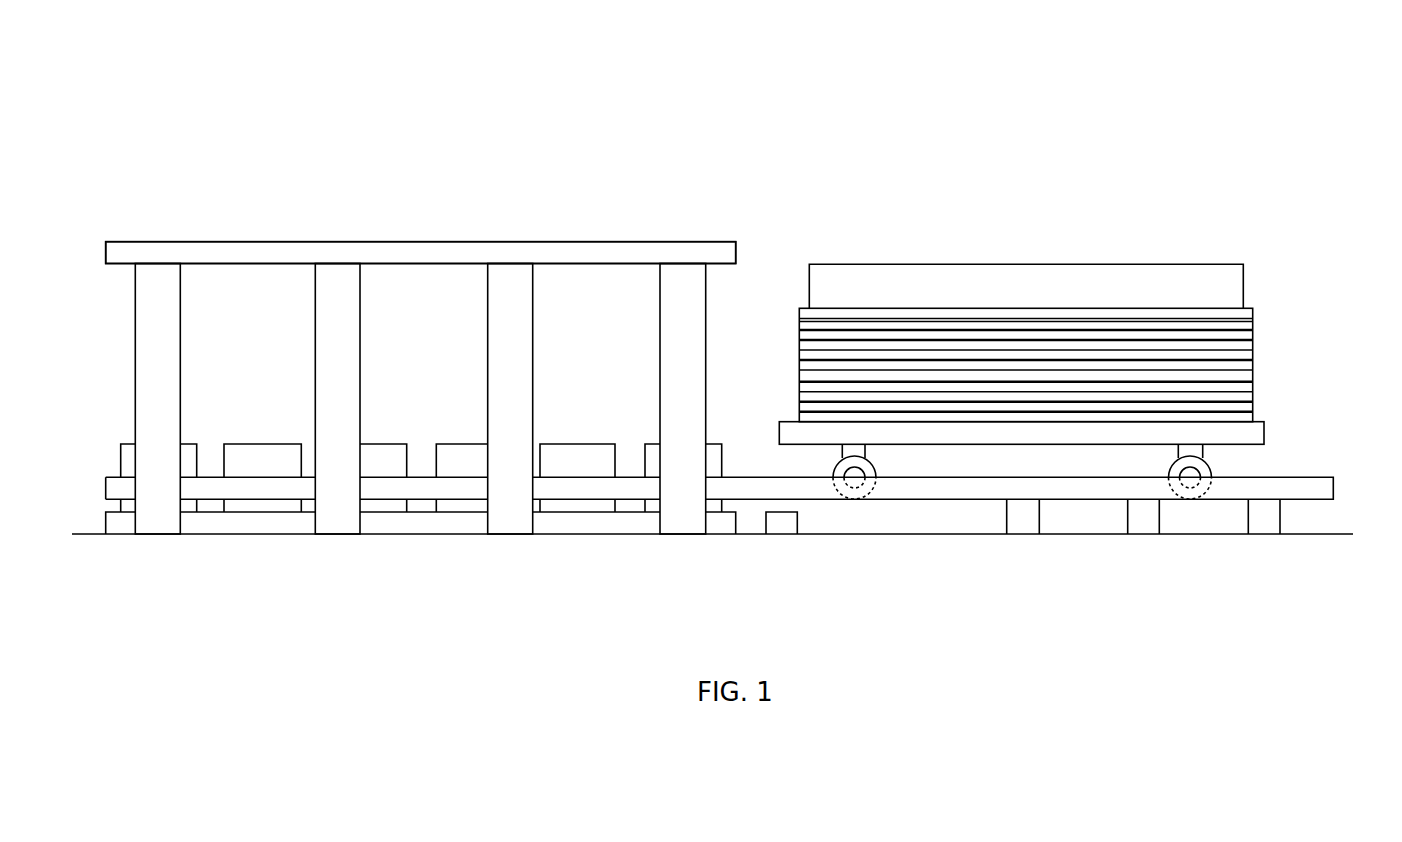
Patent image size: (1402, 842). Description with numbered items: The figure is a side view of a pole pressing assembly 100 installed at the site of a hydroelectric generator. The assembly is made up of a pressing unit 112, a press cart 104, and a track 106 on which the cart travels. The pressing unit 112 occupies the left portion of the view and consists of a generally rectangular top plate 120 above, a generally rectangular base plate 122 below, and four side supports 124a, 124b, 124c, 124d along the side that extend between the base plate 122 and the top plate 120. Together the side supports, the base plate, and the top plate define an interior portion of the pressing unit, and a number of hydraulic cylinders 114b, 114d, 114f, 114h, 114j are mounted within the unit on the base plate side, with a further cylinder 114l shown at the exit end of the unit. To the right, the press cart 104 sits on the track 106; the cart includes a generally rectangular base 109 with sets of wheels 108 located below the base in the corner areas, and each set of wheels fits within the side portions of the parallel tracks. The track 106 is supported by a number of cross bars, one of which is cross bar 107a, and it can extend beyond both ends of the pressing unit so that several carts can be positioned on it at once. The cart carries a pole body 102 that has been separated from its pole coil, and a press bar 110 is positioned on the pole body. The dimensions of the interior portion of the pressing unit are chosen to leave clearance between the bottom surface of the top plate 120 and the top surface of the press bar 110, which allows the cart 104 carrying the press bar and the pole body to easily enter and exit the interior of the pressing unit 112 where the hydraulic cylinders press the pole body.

The pole pressing assembly 100 is at (186, 172).
The pole body 102 is at (1253, 363).
The press cart 104 is at (1263, 433).
The track 106 is at (1333, 488).
The cross bar 107a is at (787, 525).
The wheels 108 is at (1213, 473).
The base 109 is at (1055, 433).
The press bar 110 is at (937, 275).
The pressing unit 112 is at (352, 240).
The hydraulic cylinder 114b is at (120, 443).
The hydraulic cylinder 114d is at (240, 443).
The hydraulic cylinder 114f is at (382, 443).
The hydraulic cylinder 114h is at (460, 443).
The hydraulic cylinder 114j is at (555, 443).
The clamp block 114l is at (722, 443).
The top plate 120 is at (590, 253).
The base plate 122 is at (392, 525).
The side support 124a is at (145, 342).
The side support 124b is at (330, 337).
The side support 124c is at (497, 342).
The side support 124d is at (673, 342).